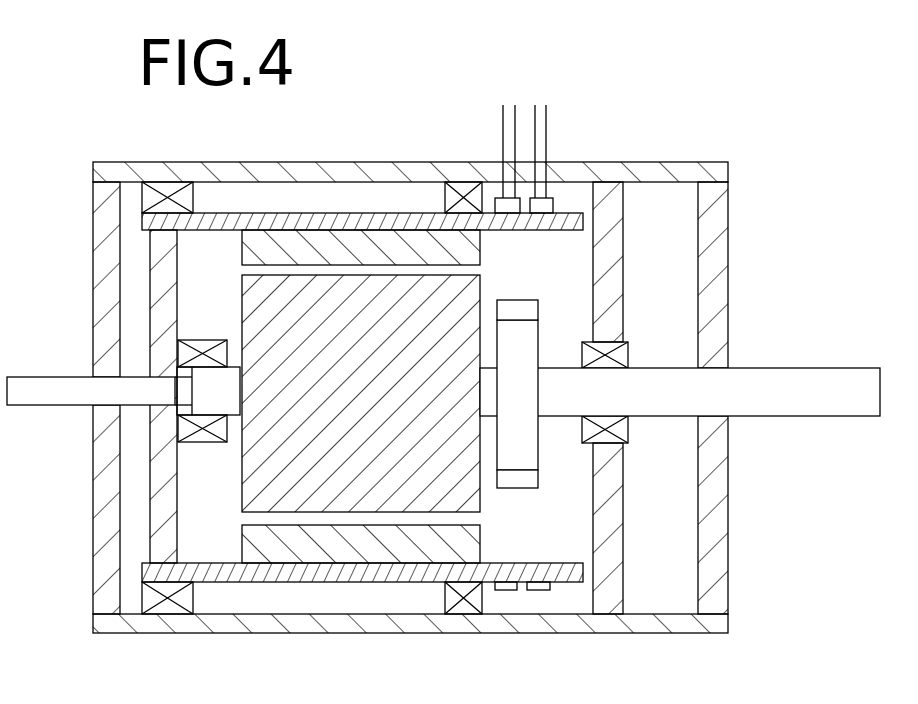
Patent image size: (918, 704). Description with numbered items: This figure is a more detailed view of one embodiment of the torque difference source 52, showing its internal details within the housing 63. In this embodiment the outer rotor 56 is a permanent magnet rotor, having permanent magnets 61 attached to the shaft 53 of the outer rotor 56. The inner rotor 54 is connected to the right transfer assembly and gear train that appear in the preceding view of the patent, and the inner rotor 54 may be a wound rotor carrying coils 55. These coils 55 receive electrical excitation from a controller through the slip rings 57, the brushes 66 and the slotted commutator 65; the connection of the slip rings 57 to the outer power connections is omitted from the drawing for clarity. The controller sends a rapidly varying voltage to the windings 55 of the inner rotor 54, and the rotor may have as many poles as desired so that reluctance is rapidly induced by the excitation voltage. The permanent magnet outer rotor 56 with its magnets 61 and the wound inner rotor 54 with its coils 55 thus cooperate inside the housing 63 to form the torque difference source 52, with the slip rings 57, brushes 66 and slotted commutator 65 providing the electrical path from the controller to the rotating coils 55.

The torque difference source 52 is at (463, 154).
The shaft 53 is at (46, 376).
The inner rotor 54 is at (827, 367).
The coils 55 is at (239, 310).
The outer rotor 56 is at (267, 215).
The slip rings 57 is at (524, 440).
The permanent magnets 61 is at (337, 237).
The housing 63 is at (134, 167).
The slotted commutator 65 is at (525, 440).
The brushes 66 is at (528, 298).